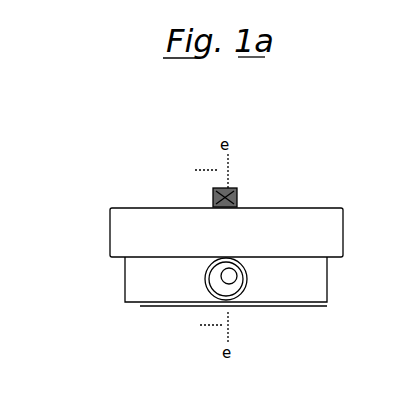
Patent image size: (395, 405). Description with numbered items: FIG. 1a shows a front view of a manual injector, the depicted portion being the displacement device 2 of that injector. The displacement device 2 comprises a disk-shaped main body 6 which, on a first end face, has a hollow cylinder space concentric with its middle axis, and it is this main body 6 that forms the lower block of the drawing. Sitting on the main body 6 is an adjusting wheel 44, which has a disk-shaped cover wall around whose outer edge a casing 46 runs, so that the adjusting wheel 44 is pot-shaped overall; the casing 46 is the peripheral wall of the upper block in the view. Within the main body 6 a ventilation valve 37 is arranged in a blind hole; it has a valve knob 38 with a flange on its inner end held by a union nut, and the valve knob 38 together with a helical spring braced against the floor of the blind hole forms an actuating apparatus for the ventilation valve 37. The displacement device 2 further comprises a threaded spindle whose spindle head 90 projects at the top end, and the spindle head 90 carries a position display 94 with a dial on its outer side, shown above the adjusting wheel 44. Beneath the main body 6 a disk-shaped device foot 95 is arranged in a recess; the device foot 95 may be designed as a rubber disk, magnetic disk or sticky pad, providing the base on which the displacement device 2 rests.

The displacement device 2 is at (303, 310).
The main body 6 is at (140, 289).
The ventilation valve 37 is at (243, 291).
The valve knob 38 is at (221, 284).
The adjusting wheel 44 is at (137, 225).
The casing 46 is at (123, 246).
The spindle head 90 is at (213, 192).
The position display 94 is at (237, 190).
The device foot 95 is at (155, 310).